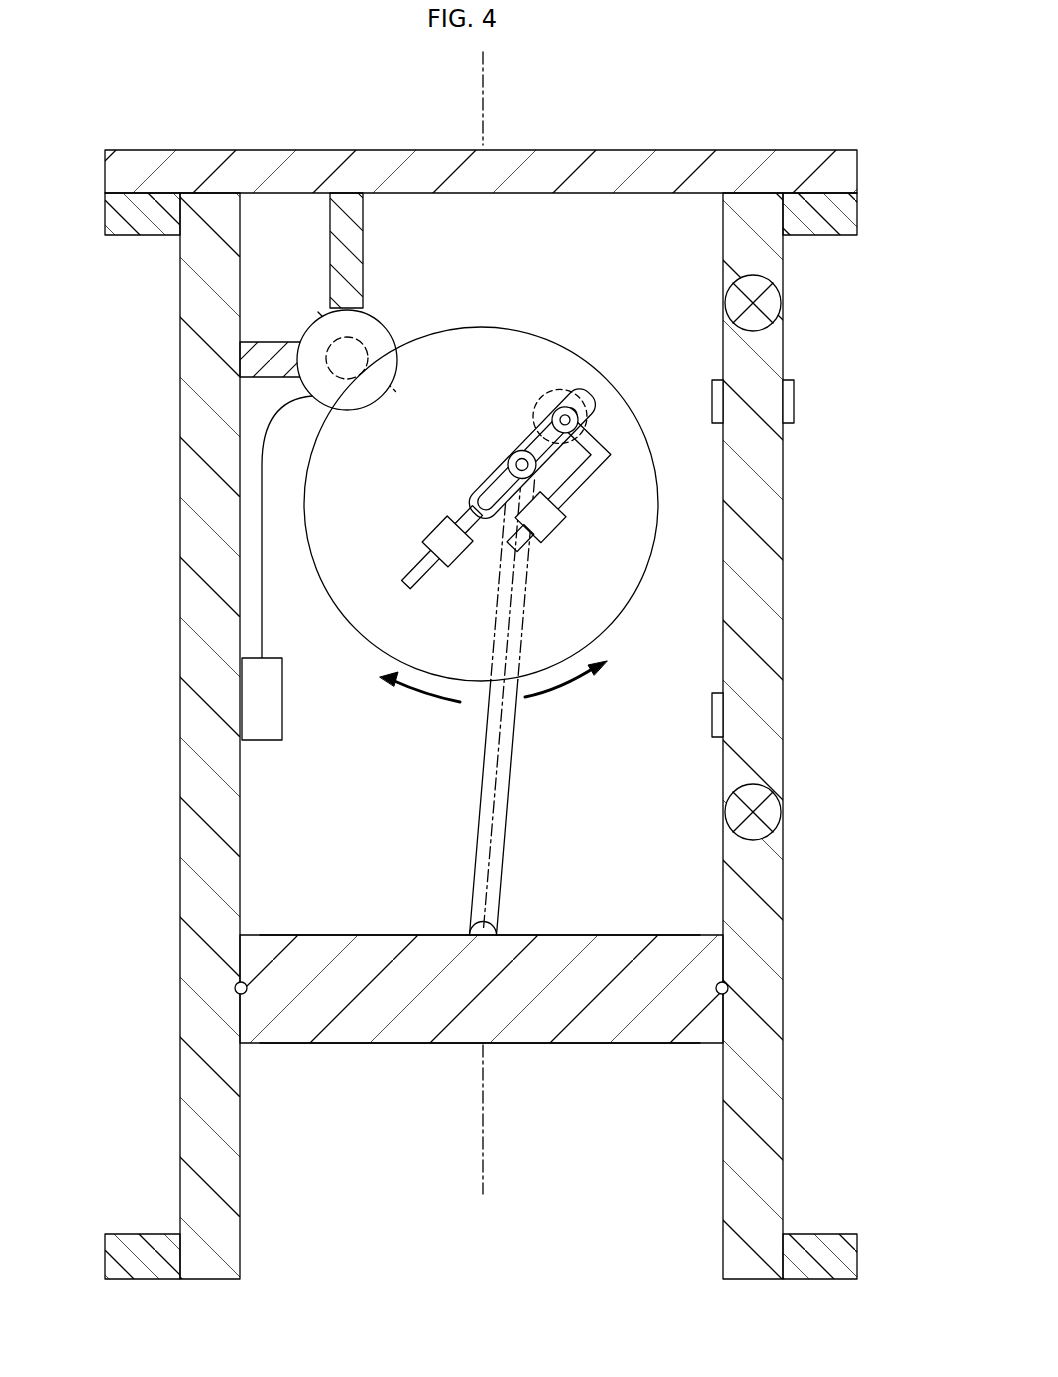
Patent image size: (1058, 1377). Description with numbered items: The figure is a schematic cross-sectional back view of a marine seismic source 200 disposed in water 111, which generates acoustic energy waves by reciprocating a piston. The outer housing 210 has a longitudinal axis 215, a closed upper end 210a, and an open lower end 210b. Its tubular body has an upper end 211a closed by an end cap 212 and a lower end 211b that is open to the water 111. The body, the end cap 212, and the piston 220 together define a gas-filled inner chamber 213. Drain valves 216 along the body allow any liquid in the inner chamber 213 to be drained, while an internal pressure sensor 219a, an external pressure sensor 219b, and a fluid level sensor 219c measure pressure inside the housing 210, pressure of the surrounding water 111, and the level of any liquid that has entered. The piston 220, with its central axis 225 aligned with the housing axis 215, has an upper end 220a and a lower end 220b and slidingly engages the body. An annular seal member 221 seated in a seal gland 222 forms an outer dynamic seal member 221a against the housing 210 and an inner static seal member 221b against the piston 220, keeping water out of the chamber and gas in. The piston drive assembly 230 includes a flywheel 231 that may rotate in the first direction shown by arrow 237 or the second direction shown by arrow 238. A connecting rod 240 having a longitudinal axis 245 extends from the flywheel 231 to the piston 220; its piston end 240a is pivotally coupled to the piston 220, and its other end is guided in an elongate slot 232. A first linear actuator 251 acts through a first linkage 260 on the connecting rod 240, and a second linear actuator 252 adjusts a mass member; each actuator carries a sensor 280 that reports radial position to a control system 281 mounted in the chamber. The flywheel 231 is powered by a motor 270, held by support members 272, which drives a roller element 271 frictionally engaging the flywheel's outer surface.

The water 111 is at (479, 942).
The marine seismic source 200 is at (628, 72).
The outer housing 210 is at (481, 718).
The upper end of housing 210a is at (268, 150).
The lower end of housing 210b is at (213, 1279).
The upper end of body 211a is at (212, 212).
The lower end of body 211b is at (210, 1256).
The end cap 212 is at (686, 150).
The inner chamber 213 is at (626, 290).
The longitudinal axis 215 is at (482, 100).
The drain valves 216 is at (775, 303).
The internal pressure sensor 219a is at (712, 400).
The external pressure sensor 219b is at (794, 400).
The fluid level sensor 219c is at (712, 715).
The piston 220 is at (402, 1045).
The upper end of piston 220a is at (618, 935).
The lower end of piston 220b is at (583, 1043).
The annular seal member 221 is at (477, 989).
The dynamic seal member 221a is at (240, 988).
The static seal member 221b is at (250, 986).
The seal gland 222 is at (716, 988).
The piston central axis 225 is at (482, 1147).
The piston drive assembly 230 is at (452, 268).
The flywheel 231 is at (504, 328).
The elongate slot 232 is at (534, 436).
The first direction arrow 237 is at (560, 700).
The second direction arrow 238 is at (437, 714).
The connecting rod 240 is at (478, 827).
The piston end of connecting rod 240a is at (478, 922).
The connecting rod axis 245 is at (494, 810).
The first linear actuator 251 is at (436, 530).
The second linear actuator 252 is at (560, 532).
The first linkage 260 is at (418, 598).
The motor 270 is at (377, 326).
The roller element 271 is at (318, 312).
The support members 272 is at (270, 342).
The sensor 280 is at (416, 556).
The control system 281 is at (282, 705).